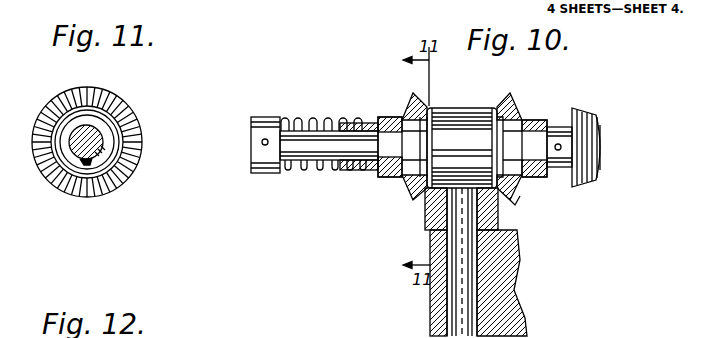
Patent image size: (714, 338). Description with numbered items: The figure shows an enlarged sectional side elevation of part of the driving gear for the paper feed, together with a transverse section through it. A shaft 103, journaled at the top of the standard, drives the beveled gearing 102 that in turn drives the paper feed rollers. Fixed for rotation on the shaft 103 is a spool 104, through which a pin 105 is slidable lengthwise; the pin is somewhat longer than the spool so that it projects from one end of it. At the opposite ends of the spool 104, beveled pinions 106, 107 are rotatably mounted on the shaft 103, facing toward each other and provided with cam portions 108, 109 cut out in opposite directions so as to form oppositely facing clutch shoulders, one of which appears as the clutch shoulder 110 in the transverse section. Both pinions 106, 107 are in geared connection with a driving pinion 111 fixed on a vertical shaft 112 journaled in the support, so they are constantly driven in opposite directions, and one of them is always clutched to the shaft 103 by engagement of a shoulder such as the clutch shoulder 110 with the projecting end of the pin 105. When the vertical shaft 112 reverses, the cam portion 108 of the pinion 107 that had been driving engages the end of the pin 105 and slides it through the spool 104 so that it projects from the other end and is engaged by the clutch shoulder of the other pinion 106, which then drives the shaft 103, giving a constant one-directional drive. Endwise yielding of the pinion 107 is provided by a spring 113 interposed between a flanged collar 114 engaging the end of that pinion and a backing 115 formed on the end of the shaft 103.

In FIG. 10, the beveled gearing 102 is at (597, 120).
In FIG. 10, the shaft 103 is at (555, 130).
In FIG. 10, the spool 104 is at (457, 115).
In FIG. 10, the pin 105 is at (407, 182).
In FIG. 10, the beveled pinion 106 is at (523, 118).
In FIG. 10, the beveled pinion 107 is at (397, 120).
In FIG. 11, the cam portion 108 is at (108, 133).
In FIG. 10, the cam portion 108 is at (368, 117).
In FIG. 10, the cam portion 109 is at (527, 180).
In FIG. 11, the clutch shoulder 110 is at (82, 168).
In FIG. 10, the clutch shoulder 110 is at (520, 186).
In FIG. 10, the driving pinion 111 is at (507, 207).
In FIG. 10, the vertical shaft 112 is at (472, 300).
In FIG. 10, the spring 113 is at (321, 171).
In FIG. 10, the flanged collar 114 is at (372, 175).
In FIG. 10, the backing 115 is at (251, 165).